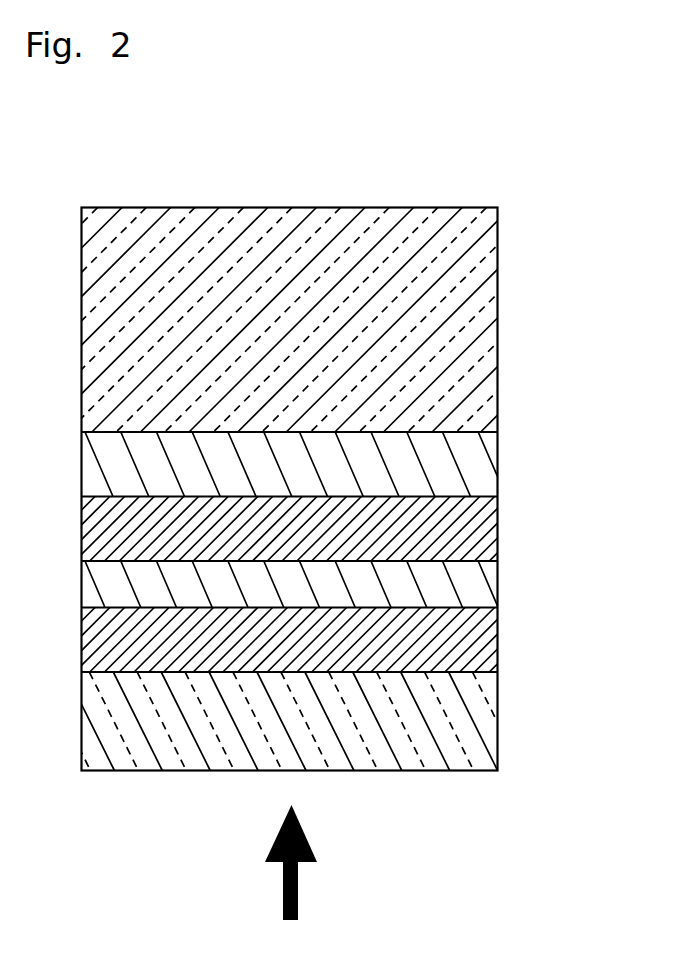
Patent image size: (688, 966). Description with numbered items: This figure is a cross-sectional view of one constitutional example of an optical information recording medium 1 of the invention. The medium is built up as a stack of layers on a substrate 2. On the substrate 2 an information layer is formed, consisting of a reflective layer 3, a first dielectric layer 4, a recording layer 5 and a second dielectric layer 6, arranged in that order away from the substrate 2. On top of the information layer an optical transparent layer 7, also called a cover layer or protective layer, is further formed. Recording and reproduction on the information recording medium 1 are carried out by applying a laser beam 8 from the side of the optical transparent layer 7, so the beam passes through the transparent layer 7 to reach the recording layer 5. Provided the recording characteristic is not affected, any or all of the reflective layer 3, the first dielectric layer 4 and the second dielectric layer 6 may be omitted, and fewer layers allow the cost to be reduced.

The information recording medium 1 is at (340, 435).
The substrate 2 is at (479, 321).
The reflective layer 3 is at (479, 459).
The first dielectric layer 4 is at (477, 526).
The recording layer 5 is at (477, 584).
The second dielectric layer 6 is at (477, 639).
The optical transparent layer 7 is at (477, 721).
The laser beam 8 is at (298, 893).